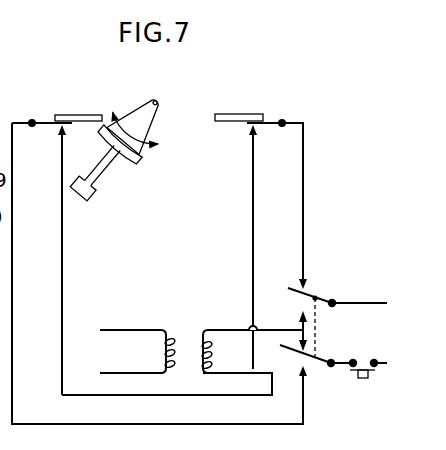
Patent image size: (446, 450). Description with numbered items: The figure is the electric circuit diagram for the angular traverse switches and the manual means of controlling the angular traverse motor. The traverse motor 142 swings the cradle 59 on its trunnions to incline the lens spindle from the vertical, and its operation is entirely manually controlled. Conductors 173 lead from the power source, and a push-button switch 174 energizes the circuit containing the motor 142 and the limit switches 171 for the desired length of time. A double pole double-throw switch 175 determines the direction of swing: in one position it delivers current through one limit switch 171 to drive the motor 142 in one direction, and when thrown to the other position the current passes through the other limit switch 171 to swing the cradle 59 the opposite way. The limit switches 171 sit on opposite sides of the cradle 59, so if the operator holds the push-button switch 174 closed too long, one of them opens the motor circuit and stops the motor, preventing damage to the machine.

The limit switches 171 is at (72, 112).
The cradle 59 is at (131, 108).
The traverse motor 142 is at (210, 327).
The conductors 173 is at (365, 300).
The double pole double-throw switch 175 is at (334, 298).
The push-button switch 174 is at (374, 382).